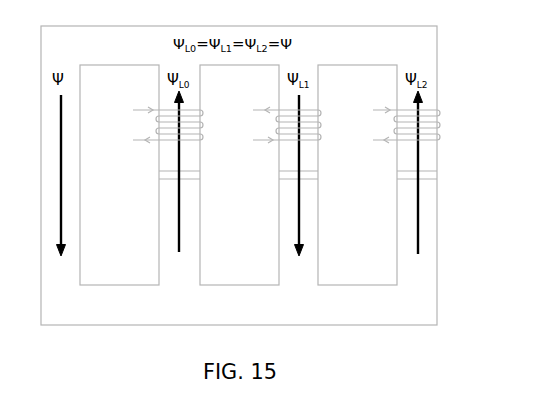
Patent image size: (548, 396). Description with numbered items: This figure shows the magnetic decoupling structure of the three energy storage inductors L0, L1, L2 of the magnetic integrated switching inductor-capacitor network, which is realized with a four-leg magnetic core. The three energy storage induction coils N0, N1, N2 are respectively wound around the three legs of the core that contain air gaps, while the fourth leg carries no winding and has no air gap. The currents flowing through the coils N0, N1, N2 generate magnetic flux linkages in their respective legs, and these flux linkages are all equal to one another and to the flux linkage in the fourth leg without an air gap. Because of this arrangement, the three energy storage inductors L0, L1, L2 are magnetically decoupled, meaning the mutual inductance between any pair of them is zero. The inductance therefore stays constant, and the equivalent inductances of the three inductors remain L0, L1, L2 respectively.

The energy storage inductor L0 is at (151, 130).
The energy storage inductor L1 is at (270, 130).
The energy storage inductor L2 is at (388, 130).
The energy storage induction coil N0 is at (151, 125).
The energy storage induction coil N1 is at (270, 125).
The energy storage induction coil N2 is at (388, 125).